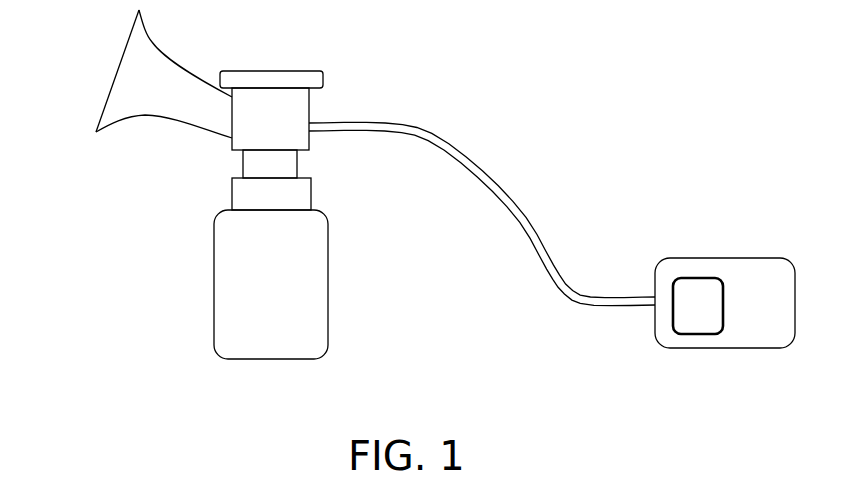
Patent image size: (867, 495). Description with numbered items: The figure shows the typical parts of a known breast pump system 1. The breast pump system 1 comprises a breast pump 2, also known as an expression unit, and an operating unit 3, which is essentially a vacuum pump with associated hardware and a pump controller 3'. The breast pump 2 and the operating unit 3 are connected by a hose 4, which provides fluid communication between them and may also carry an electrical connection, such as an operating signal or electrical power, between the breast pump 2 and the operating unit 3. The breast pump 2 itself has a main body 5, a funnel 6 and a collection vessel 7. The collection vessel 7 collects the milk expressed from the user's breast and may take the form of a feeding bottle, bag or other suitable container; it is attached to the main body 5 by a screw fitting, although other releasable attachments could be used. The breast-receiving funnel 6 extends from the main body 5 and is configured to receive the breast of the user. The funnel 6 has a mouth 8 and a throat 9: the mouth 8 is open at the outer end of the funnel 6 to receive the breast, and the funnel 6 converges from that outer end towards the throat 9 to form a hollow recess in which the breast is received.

The breast pump system 1 is at (565, 108).
The breast pump 2 is at (368, 248).
The operating unit 3 is at (725, 272).
The pump controller 3' is at (648, 322).
The hose 4 is at (430, 131).
The main body 5 is at (310, 150).
The funnel 6 is at (116, 76).
The collection vessel 7 is at (214, 272).
The mouth 8 is at (116, 96).
The throat 9 is at (187, 86).